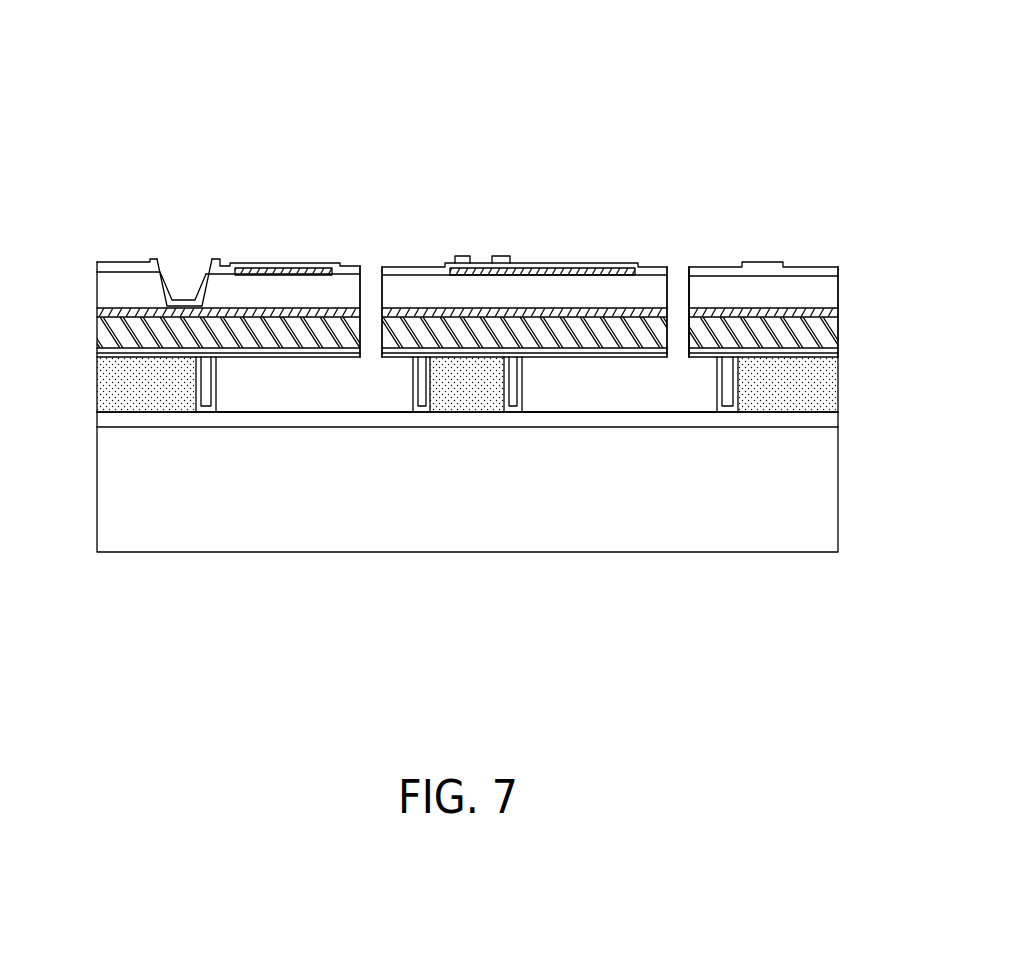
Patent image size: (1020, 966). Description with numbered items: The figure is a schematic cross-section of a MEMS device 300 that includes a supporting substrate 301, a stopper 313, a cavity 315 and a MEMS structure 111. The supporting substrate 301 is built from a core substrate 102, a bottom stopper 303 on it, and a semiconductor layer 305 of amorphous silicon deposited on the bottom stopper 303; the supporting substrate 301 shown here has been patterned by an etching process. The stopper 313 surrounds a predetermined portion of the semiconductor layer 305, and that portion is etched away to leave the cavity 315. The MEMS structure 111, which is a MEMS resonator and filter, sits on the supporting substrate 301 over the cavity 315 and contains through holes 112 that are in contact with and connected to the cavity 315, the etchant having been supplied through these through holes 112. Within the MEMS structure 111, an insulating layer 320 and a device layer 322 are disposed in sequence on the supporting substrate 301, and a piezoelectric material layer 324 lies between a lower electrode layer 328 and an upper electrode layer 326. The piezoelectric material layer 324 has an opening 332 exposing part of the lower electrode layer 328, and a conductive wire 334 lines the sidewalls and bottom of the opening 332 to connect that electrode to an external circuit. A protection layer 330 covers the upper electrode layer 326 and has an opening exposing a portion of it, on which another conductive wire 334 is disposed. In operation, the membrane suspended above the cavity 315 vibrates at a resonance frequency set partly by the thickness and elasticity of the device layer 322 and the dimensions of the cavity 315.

The MEMS device 300 is at (755, 103).
The supporting substrate 301 is at (862, 468).
The core substrate 102 is at (680, 541).
The bottom stopper 303 is at (127, 418).
The semiconductor layer 305 is at (175, 400).
The stopper 313 is at (164, 378).
The cavity 315 is at (291, 386).
The insulating layer 320 is at (105, 352).
The device layer 322 is at (118, 332).
The piezoelectric material layer 324 is at (118, 292).
The upper electrode layer 326 is at (603, 270).
The lower electrode layer 328 is at (421, 316).
The protection layer 330 is at (792, 272).
The opening 332 is at (183, 258).
The conductive wire 334 is at (213, 267).
The through hole 112 is at (364, 257).
The MEMS structure 111 is at (857, 307).